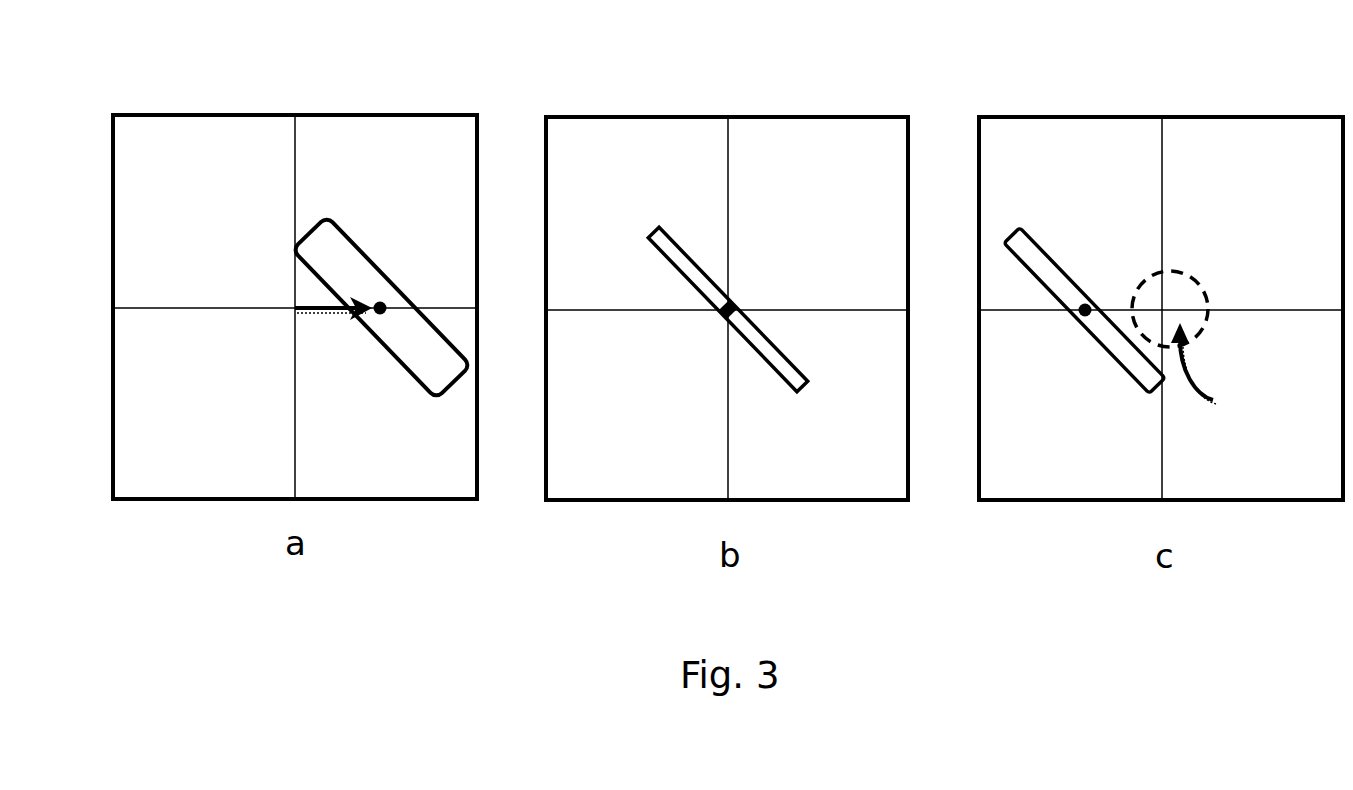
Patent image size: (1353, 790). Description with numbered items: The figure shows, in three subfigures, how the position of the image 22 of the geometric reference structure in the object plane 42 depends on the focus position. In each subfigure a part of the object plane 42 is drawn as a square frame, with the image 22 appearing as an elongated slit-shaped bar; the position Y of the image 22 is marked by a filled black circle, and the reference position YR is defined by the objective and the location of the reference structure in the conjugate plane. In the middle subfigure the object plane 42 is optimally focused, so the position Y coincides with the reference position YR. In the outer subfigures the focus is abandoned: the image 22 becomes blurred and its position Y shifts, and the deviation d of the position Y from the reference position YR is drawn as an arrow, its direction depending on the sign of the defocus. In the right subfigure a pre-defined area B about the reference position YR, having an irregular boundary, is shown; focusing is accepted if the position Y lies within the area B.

The image of the geometric reference structure 22 is at (329, 250).
The object plane 42 is at (182, 455).
The position of the image Y is at (366, 322).
The reference position YR is at (1226, 250).
The deviation d is at (333, 315).
The area about the reference position B is at (1206, 374).